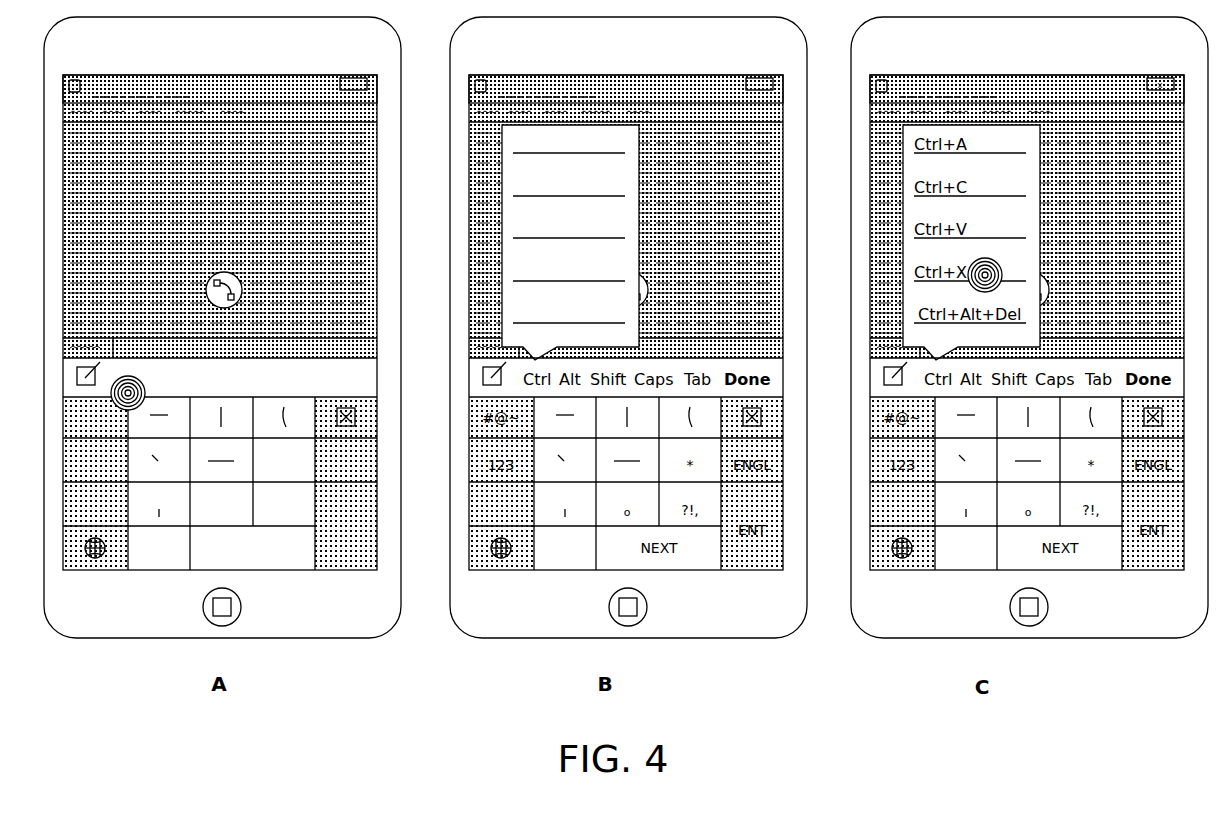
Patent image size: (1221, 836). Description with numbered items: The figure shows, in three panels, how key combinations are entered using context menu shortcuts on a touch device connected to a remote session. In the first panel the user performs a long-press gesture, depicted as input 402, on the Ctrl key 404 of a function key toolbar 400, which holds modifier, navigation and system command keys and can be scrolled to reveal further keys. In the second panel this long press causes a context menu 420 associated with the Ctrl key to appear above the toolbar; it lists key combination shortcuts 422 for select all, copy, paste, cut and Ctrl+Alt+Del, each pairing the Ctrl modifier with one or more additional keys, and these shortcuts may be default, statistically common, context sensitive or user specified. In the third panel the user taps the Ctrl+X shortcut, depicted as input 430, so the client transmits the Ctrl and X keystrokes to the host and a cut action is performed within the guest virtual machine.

The function key toolbar 400 is at (316, 357).
The input 402 is at (142, 403).
The Ctrl key 404 is at (130, 358).
The context menu 420 is at (574, 199).
The key combination shortcuts 422 is at (579, 166).
The input 430 is at (1007, 251).